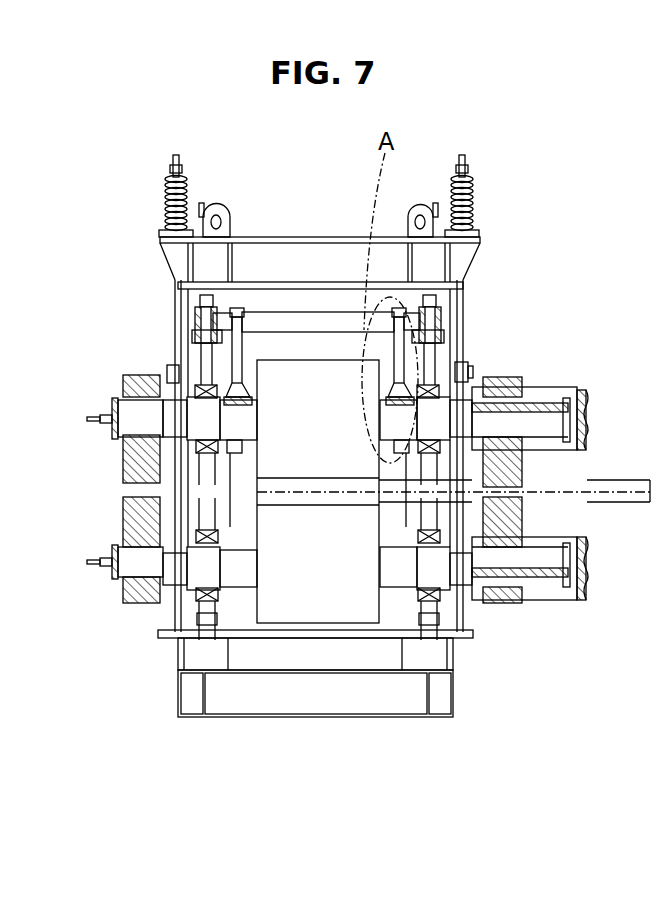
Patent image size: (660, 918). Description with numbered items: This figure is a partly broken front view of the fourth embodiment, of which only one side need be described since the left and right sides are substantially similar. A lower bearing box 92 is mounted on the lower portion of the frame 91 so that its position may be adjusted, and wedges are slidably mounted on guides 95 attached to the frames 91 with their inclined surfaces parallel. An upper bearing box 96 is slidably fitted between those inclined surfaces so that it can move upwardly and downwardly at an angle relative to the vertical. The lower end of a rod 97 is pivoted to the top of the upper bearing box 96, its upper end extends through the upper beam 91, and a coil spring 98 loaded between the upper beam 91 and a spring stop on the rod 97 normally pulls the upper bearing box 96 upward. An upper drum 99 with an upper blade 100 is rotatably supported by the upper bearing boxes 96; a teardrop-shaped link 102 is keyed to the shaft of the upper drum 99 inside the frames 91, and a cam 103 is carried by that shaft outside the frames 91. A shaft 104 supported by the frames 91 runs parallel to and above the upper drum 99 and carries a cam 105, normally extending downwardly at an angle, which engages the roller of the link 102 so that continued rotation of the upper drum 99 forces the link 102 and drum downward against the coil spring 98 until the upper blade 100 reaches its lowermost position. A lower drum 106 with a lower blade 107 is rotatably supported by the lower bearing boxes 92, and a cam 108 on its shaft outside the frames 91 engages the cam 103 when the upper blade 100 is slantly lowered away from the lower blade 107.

The frame 91 is at (324, 238).
The lower bearing box 92 is at (204, 522).
The guides 95 is at (608, 470).
The upper bearing box 96 is at (208, 470).
The rod 97 is at (176, 300).
The coil spring 98 is at (162, 203).
The upper drum 99 is at (272, 368).
The upper blade 100 is at (372, 488).
The teardrop-shaped link 102 is at (233, 360).
The cam 103 is at (122, 385).
The shaft 104 is at (328, 318).
The cam 105 is at (240, 305).
The lower drum 106 is at (357, 617).
The lower blade 107 is at (380, 503).
The cam 108 is at (125, 598).